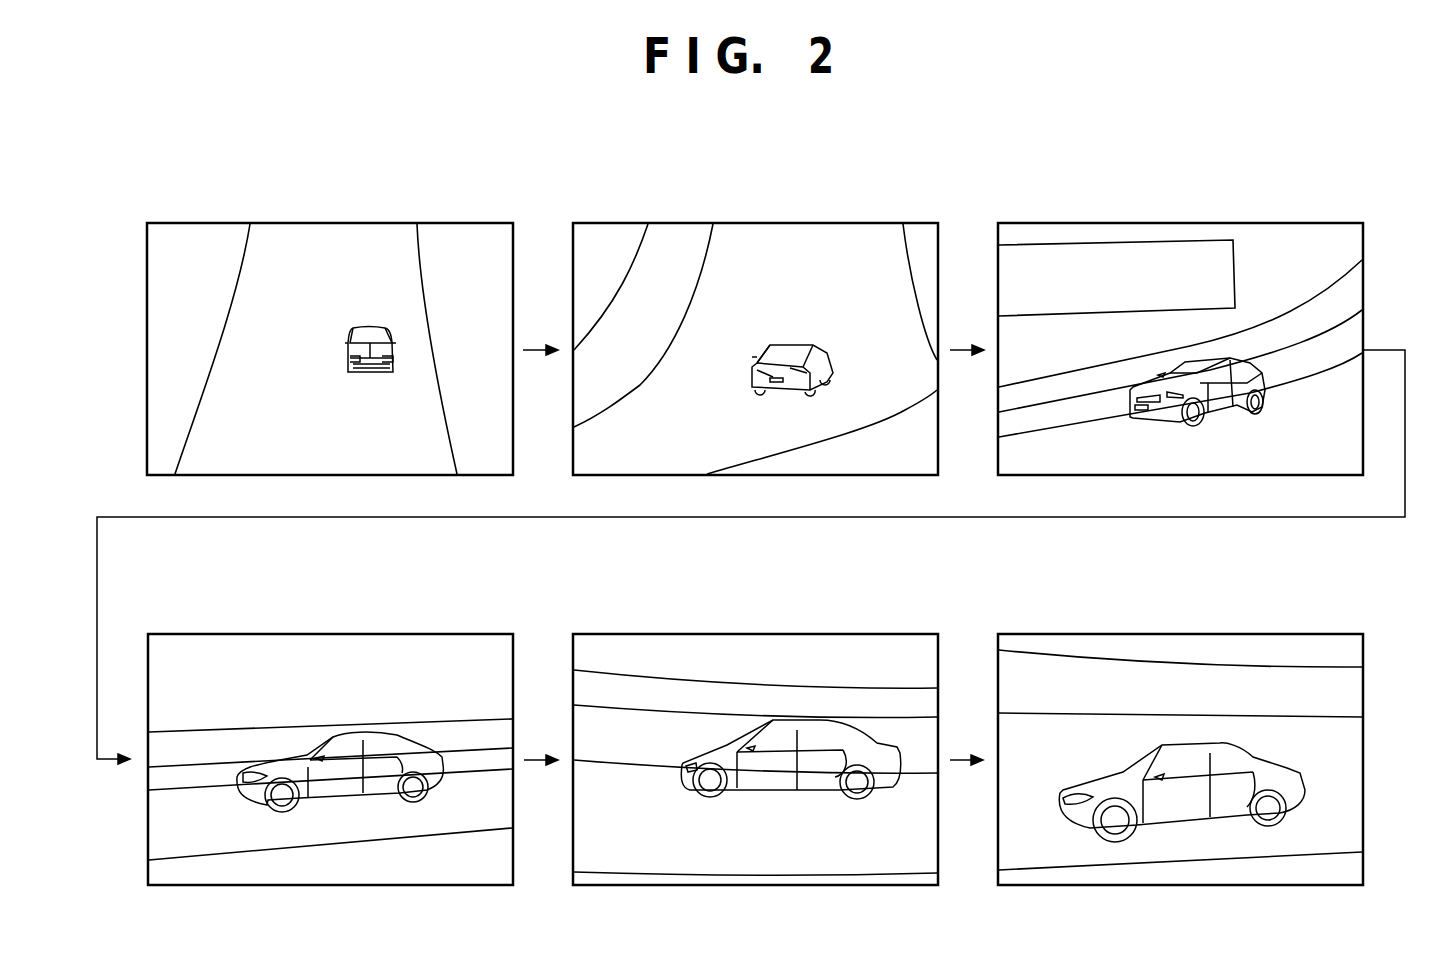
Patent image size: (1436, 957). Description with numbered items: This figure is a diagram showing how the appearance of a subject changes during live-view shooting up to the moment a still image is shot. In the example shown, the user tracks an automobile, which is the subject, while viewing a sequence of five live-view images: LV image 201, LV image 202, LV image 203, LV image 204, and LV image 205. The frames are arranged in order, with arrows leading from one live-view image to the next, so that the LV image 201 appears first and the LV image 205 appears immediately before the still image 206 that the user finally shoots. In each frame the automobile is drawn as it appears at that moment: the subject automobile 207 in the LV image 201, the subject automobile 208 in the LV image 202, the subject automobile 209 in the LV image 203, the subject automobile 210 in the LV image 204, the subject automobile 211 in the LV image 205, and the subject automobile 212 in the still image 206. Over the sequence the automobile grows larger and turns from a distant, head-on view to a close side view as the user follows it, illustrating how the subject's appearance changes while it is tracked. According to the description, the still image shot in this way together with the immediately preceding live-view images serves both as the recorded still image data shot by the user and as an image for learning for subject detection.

The LV image 201 is at (280, 223).
The LV image 202 is at (724, 223).
The LV image 203 is at (1118, 223).
The LV image 204 is at (280, 634).
The LV image 205 is at (704, 634).
The still image 206 is at (1173, 634).
The subject vehicle in LV1 207 is at (370, 327).
The subject vehicle in LV2 208 is at (797, 343).
The subject vehicle in LV3 209 is at (1233, 360).
The subject vehicle in LV4 210 is at (392, 731).
The subject vehicle in LV5 211 is at (852, 733).
The subject vehicle in still image 1 212 is at (1221, 744).